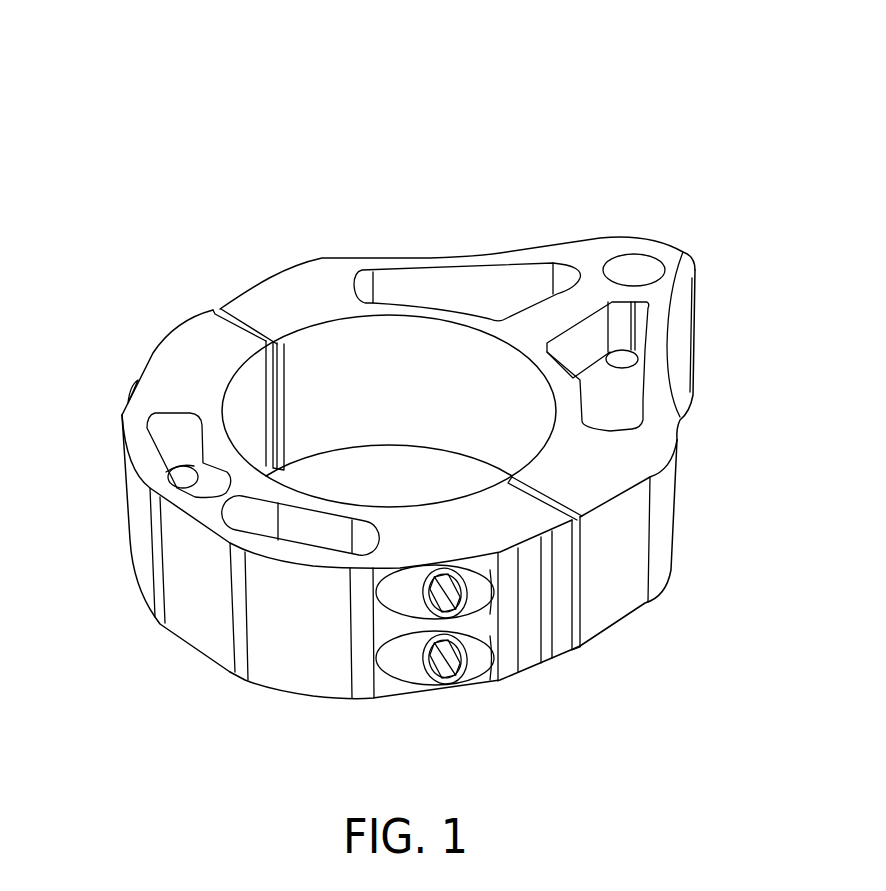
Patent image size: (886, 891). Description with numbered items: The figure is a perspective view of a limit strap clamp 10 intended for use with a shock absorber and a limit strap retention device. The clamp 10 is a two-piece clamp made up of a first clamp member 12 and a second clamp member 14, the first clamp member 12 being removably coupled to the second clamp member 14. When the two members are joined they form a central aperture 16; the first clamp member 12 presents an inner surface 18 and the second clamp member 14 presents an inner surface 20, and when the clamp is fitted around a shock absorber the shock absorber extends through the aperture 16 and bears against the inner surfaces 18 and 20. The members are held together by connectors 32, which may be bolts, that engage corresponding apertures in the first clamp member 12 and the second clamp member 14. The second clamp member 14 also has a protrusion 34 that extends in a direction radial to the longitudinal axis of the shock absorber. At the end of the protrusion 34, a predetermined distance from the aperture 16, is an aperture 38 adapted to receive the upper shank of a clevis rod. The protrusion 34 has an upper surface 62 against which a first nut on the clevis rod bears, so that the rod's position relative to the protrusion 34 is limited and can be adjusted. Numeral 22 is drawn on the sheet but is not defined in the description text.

The limit strap clamp 10 is at (268, 89).
The first clamp member 12 is at (167, 372).
The second clamp member 14 is at (318, 272).
The aperture 16 is at (452, 470).
The inner surface 18 is at (248, 433).
The inner surface 20 is at (458, 373).
The fourth segment 22 is at (310, 672).
The connectors 32 is at (430, 672).
The protrusion 34 is at (680, 353).
The aperture 38 is at (633, 273).
The upper surface 62 is at (608, 248).